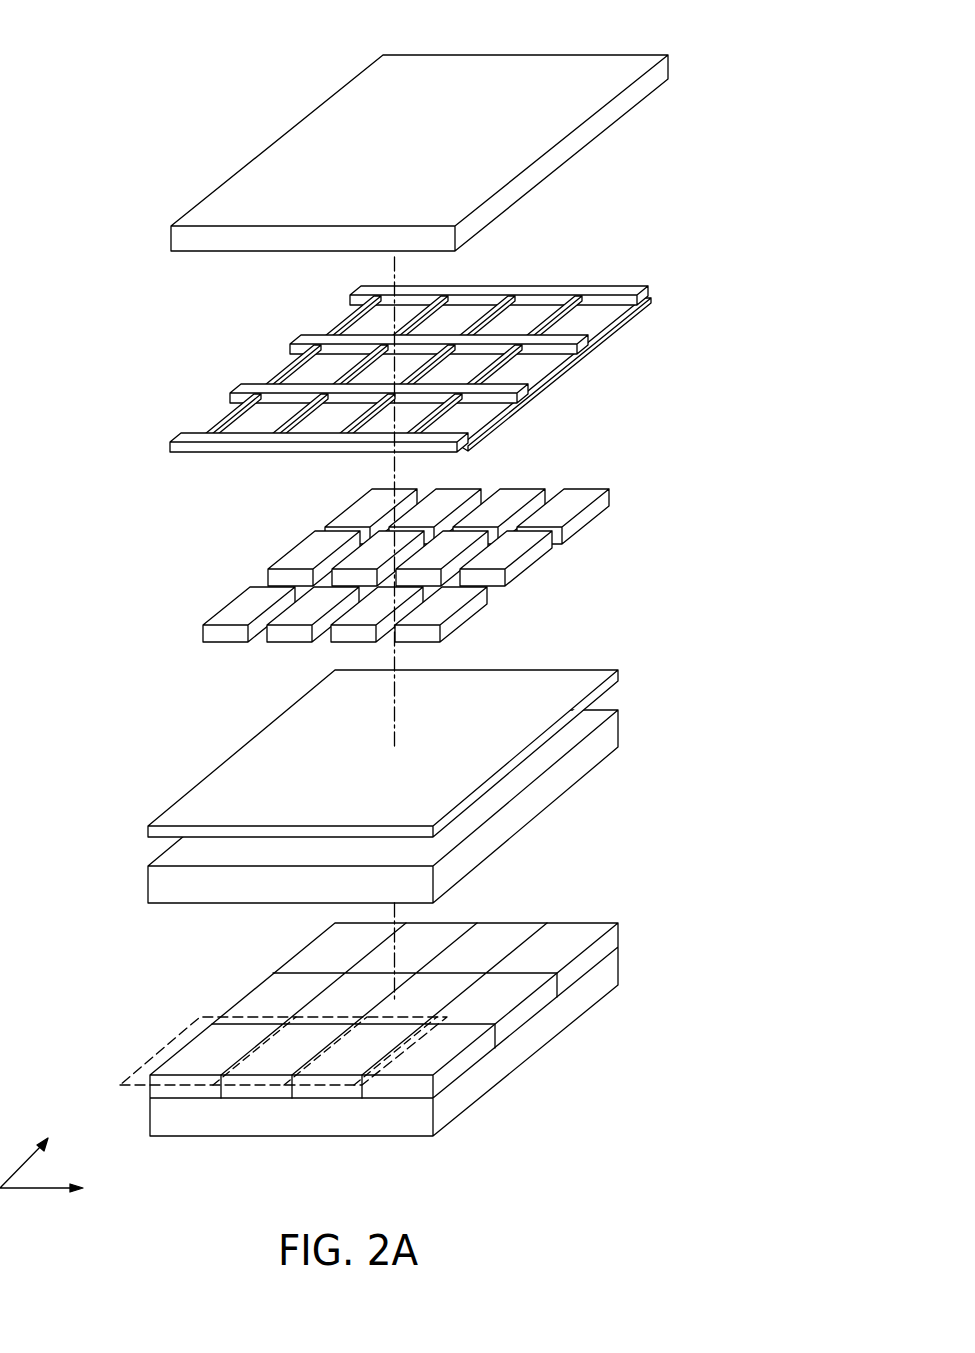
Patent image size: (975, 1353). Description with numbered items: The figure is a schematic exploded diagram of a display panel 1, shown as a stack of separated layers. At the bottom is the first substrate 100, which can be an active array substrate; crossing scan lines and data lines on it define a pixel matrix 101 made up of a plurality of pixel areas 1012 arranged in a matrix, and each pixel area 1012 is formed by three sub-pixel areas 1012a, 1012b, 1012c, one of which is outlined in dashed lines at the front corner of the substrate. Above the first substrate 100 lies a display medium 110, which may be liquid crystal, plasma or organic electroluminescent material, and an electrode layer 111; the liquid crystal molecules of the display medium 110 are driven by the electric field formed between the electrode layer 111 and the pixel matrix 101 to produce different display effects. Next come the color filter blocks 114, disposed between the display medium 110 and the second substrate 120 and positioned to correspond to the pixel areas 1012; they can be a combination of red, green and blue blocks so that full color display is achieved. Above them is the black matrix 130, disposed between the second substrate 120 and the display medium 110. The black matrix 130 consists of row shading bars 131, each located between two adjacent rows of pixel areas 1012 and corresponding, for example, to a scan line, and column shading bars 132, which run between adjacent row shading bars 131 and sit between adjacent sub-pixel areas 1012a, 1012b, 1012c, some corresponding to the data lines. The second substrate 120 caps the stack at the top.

The display panel 1 is at (92, 33).
The first substrate 100 is at (613, 970).
The pixel matrix 101 is at (617, 938).
The pixel area 1012 is at (252, 1090).
The sub-pixel area 1012a is at (182, 1078).
The sub-pixel area 1012b is at (262, 1078).
The sub-pixel area 1012c is at (337, 1078).
The display medium 110 is at (575, 762).
The electrode layer 111 is at (562, 680).
The color filter blocks 114 is at (588, 513).
The second substrate 120 is at (585, 134).
The black matrix 130 is at (445, 369).
The row shading bars 131 is at (642, 300).
The column shading bars 132 is at (608, 330).